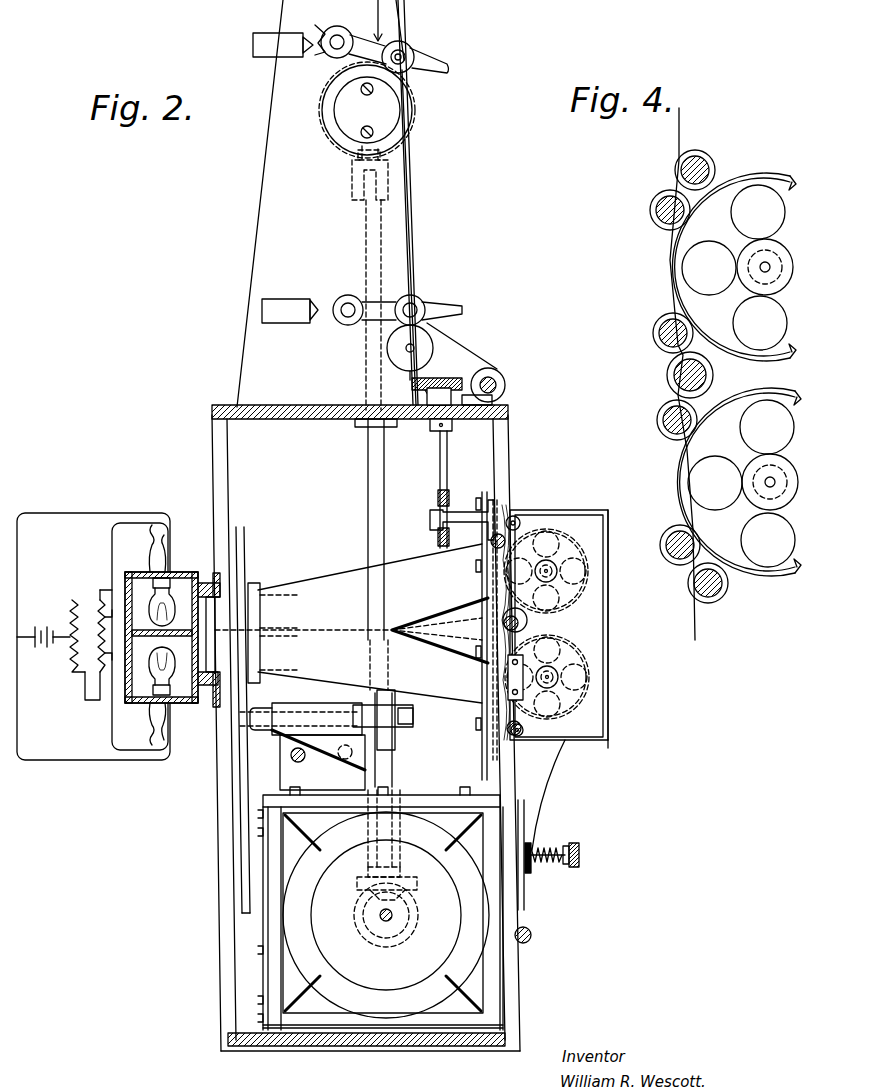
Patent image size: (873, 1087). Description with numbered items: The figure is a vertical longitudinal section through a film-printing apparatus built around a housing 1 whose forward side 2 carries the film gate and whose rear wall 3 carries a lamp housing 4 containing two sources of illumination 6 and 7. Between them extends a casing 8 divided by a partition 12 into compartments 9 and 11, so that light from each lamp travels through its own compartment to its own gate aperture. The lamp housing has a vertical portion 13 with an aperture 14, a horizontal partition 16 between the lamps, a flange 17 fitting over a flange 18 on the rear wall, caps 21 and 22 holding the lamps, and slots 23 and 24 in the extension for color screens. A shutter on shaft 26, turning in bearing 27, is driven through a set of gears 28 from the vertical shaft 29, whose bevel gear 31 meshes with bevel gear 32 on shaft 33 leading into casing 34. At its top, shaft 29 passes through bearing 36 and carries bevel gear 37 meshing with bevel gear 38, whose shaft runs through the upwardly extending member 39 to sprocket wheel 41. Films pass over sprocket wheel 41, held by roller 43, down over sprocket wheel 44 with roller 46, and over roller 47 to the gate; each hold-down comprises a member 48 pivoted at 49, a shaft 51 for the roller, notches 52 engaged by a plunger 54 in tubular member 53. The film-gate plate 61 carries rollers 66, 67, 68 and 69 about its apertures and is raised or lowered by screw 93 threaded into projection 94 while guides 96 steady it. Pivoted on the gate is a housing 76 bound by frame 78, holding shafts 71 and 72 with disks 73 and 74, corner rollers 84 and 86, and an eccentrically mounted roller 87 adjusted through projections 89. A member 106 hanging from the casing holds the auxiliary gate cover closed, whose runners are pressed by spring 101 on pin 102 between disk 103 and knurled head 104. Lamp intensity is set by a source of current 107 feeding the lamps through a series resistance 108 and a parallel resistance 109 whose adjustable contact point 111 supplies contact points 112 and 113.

In FIG. 2, the housing 1 is at (218, 408).
In FIG. 2, the forward side 2 is at (510, 448).
In FIG. 2, the rear wall 3 is at (212, 455).
In FIG. 2, the lamp housing 4 is at (178, 715).
In FIG. 2, the source of illumination 6 is at (150, 600).
In FIG. 2, the source of illumination 7 is at (160, 682).
In FIG. 2, the casing 8 is at (330, 583).
In FIG. 2, the compartment 9 is at (343, 602).
In FIG. 2, the compartment 11 is at (370, 675).
In FIG. 2, the partition 12 is at (312, 628).
In FIG. 2, the vertical portion 13 is at (128, 592).
In FIG. 2, the aperture 14 is at (192, 665).
In FIG. 2, the partition 16 is at (130, 672).
In FIG. 2, the flange 17 is at (210, 585).
In FIG. 2, the flange 18 is at (215, 598).
In FIG. 2, the cap 21 is at (150, 572).
In FIG. 2, the cap 22 is at (160, 703).
In FIG. 2, the slot 23 is at (212, 612).
In FIG. 2, the slot 24 is at (212, 652).
In FIG. 2, the shaft 26 is at (288, 728).
In FIG. 2, the bearing 27 is at (320, 740).
In FIG. 2, the set of gears 28 is at (402, 722).
In FIG. 2, the vertical shaft 29 is at (366, 224).
In FIG. 2, the bevel gear 31 is at (357, 884).
In FIG. 2, the bevel gear 32 is at (385, 945).
In FIG. 2, the shaft 33 is at (393, 917).
In FIG. 2, the casing 34 is at (270, 1000).
In FIG. 2, the bearing 36 is at (360, 428).
In FIG. 2, the bevel gear 37 is at (385, 160).
In FIG. 2, the bevel gear 38 is at (325, 128).
In FIG. 2, the upwardly extending member 39 is at (402, 8).
In FIG. 2, the sprocket wheel 41 is at (414, 118).
In FIG. 2, the roller 43 is at (412, 52).
In FIG. 2, the sprocket wheel 44 is at (432, 352).
In FIG. 2, the roller 46 is at (420, 300).
In FIG. 2, the roller 47 is at (505, 380).
In FIG. 2, the member 48 is at (450, 68).
In FIG. 2, the pivot 49 is at (338, 36).
In FIG. 2, the shaft 51 is at (403, 62).
In FIG. 2, the notch 52 is at (318, 30).
In FIG. 2, the tubular member 53 is at (285, 48).
In FIG. 2, the plunger 54 is at (305, 46).
In FIG. 2, the plate 61 is at (535, 760).
In FIG. 2, the roller 66 is at (492, 543).
In FIG. 4, the roller 66 is at (655, 215).
In FIG. 2, the roller 67 is at (486, 600).
In FIG. 4, the roller 67 is at (660, 336).
In FIG. 2, the roller 68 is at (486, 652).
In FIG. 4, the roller 68 is at (665, 426).
In FIG. 2, the roller 69 is at (508, 727).
In FIG. 4, the roller 69 is at (670, 540).
In FIG. 2, the shaft 71 is at (552, 572).
In FIG. 4, the shaft 71 is at (765, 261).
In FIG. 2, the shaft 72 is at (552, 678).
In FIG. 4, the shaft 72 is at (770, 476).
In FIG. 2, the disks 73 is at (575, 540).
In FIG. 4, the disks 73 is at (757, 175).
In FIG. 2, the disks 74 is at (605, 695).
In FIG. 4, the disks 74 is at (773, 570).
In FIG. 2, the housing 76 is at (617, 712).
In FIG. 2, the frame 78 is at (609, 742).
In FIG. 2, the roller 84 is at (517, 519).
In FIG. 4, the roller 84 is at (702, 160).
In FIG. 2, the roller 86 is at (522, 742).
In FIG. 4, the roller 86 is at (710, 592).
In FIG. 2, the roller 87 is at (527, 626).
In FIG. 4, the roller 87 is at (706, 372).
In FIG. 2, the projection 89 is at (505, 622).
In FIG. 4, the projection 89 is at (680, 374).
In FIG. 2, the screw 93 is at (440, 470).
In FIG. 2, the projection 94 is at (465, 510).
In FIG. 2, the guides 96 is at (484, 732).
In FIG. 2, the spring 101 is at (548, 858).
In FIG. 2, the pin 102 is at (548, 852).
In FIG. 2, the disk 103 is at (532, 890).
In FIG. 2, the knurled head 104 is at (580, 857).
In FIG. 2, the member 106 is at (540, 797).
In FIG. 2, the source of current 107 is at (43, 649).
In FIG. 2, the adjustable resistance 108 is at (72, 600).
In FIG. 2, the adjustable resistance 109 is at (100, 596).
In FIG. 2, the adjustable contact point 111 is at (80, 686).
In FIG. 2, the contact point 112 is at (106, 620).
In FIG. 2, the contact point 113 is at (107, 655).